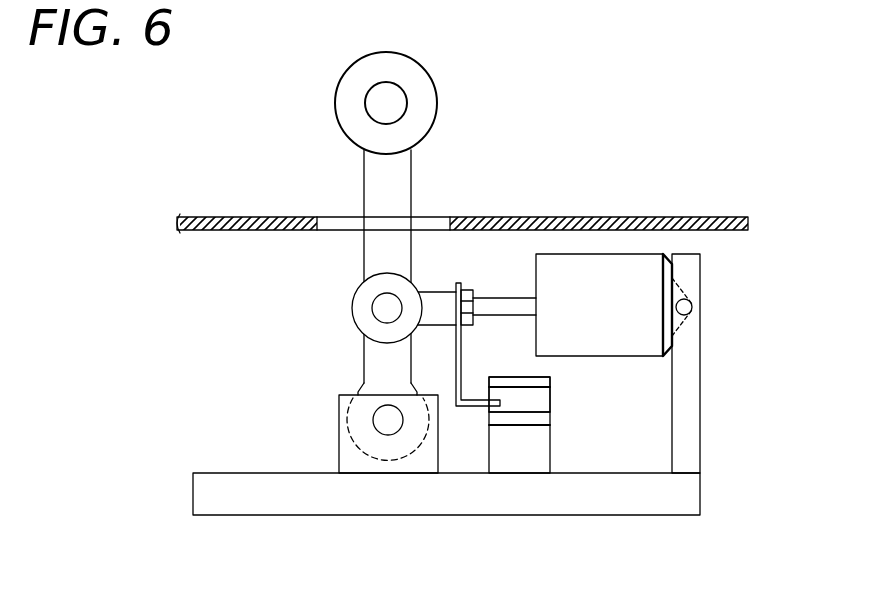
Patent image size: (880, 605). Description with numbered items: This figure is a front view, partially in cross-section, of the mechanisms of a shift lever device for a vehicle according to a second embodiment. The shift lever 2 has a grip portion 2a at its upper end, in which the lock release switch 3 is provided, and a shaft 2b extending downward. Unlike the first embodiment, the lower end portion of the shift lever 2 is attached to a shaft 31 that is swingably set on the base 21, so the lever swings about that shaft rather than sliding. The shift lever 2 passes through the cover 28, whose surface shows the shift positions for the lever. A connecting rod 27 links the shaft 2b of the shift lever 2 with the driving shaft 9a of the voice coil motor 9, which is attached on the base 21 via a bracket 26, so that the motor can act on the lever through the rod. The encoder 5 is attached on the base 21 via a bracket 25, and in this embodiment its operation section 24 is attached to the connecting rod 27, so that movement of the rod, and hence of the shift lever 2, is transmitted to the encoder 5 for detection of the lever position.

The shift lever 2 is at (377, 202).
The grip portion 2a is at (351, 68).
The shaft 2b is at (365, 187).
The lock release switch 3 is at (402, 97).
The encoder 5 is at (552, 380).
The voice coil motor 9 is at (646, 350).
The driving shaft 9a is at (503, 297).
The base 21 is at (440, 502).
The operation section 24 is at (459, 410).
The bracket 25 is at (552, 447).
The bracket 26 is at (696, 425).
The connecting rod 27 is at (432, 290).
The cover 28 is at (616, 217).
The shaft 31 is at (378, 425).